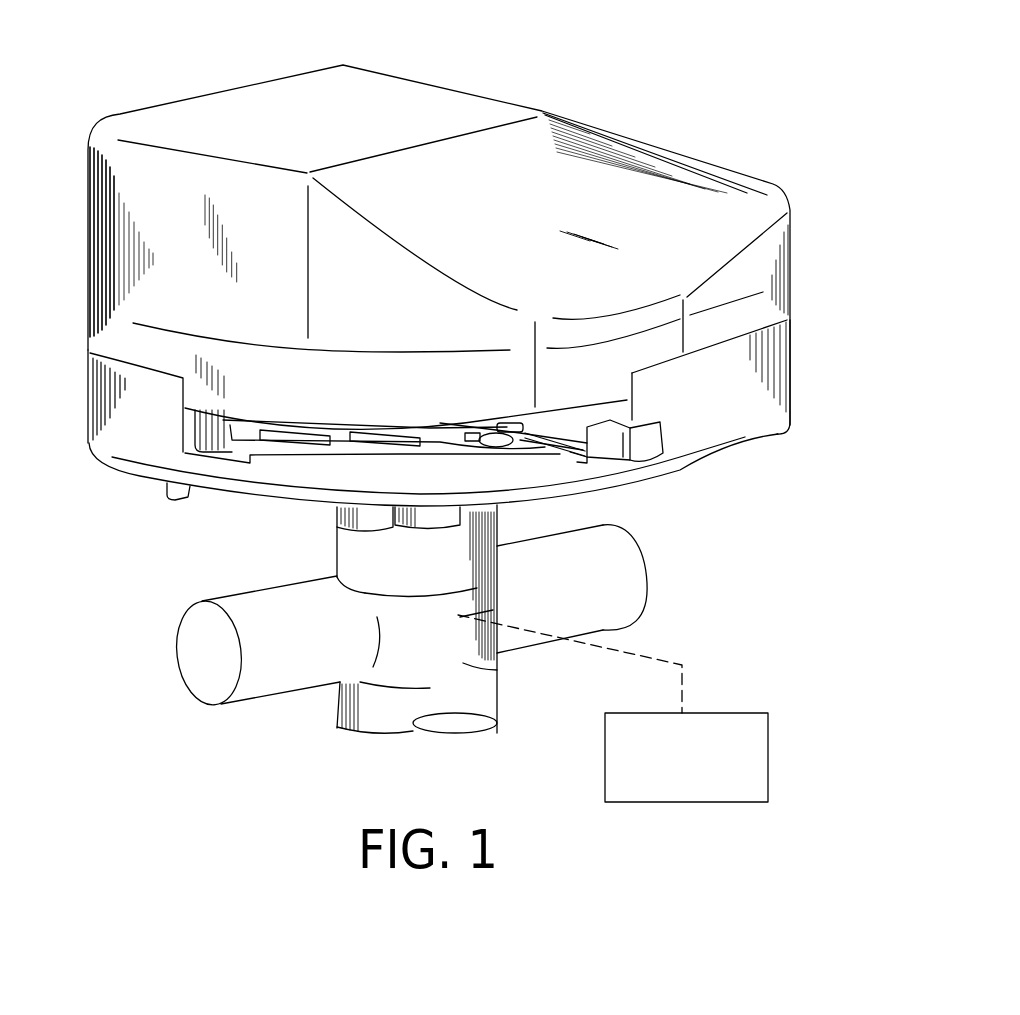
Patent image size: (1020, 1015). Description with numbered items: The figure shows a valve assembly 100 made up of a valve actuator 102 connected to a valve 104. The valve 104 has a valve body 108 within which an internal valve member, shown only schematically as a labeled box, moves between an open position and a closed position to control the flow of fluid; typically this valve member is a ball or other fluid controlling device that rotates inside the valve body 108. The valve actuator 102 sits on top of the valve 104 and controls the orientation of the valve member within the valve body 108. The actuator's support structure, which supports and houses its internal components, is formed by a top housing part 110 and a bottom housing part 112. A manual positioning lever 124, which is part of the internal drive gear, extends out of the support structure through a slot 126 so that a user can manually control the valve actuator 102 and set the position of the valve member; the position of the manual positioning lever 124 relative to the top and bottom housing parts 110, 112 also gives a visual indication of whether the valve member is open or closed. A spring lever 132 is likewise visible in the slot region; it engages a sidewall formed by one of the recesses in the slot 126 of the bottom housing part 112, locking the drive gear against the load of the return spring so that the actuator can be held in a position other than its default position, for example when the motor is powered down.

The valve assembly 100 is at (458, 407).
The valve actuator 102 is at (458, 319).
The valve 104 is at (469, 653).
The valve body 108 is at (487, 680).
The top housing part 110 is at (790, 315).
The bottom housing part 112 is at (760, 395).
The manual positioning lever 124 is at (598, 438).
The slot 126 is at (247, 438).
The spring lever 132 is at (540, 445).